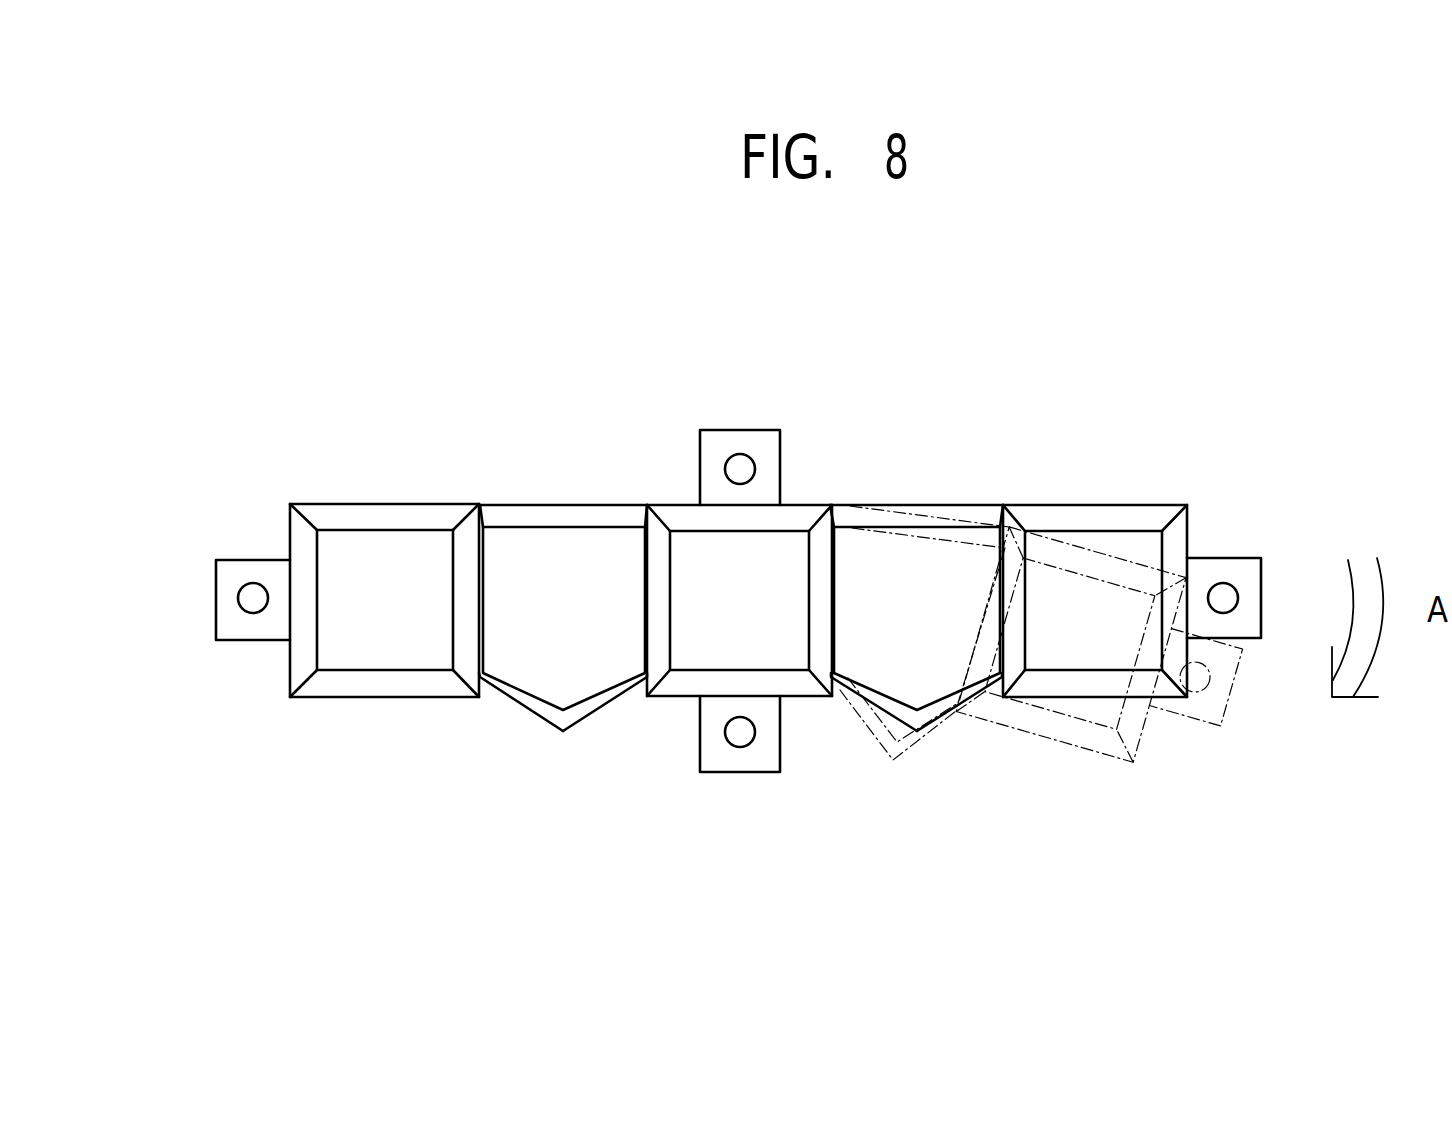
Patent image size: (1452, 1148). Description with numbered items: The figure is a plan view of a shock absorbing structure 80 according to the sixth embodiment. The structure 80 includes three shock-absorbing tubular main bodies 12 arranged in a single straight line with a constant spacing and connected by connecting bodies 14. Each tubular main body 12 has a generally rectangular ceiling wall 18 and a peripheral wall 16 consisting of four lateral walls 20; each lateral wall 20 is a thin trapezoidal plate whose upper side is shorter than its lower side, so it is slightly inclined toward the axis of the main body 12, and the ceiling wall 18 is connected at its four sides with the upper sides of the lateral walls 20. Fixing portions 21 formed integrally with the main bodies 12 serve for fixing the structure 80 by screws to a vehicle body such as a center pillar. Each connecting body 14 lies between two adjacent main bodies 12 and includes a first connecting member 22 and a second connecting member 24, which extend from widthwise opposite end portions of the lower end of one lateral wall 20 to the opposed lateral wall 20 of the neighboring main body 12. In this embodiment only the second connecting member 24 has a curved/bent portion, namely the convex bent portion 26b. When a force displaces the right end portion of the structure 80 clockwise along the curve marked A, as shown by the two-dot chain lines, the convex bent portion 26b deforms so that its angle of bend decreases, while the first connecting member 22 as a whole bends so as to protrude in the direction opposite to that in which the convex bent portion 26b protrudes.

The shock absorbing structure 80 is at (266, 465).
The shock-absorbing tubular main body 12 is at (298, 722).
The connecting body 14 is at (597, 727).
The peripheral wall 16 is at (815, 503).
The ceiling wall 18 is at (345, 545).
The lateral wall 20 is at (360, 510).
The fixing portion 21 is at (225, 565).
The first connecting member 22 is at (585, 515).
The second connecting member 24 is at (530, 705).
The convex bent portion 26b is at (572, 732).